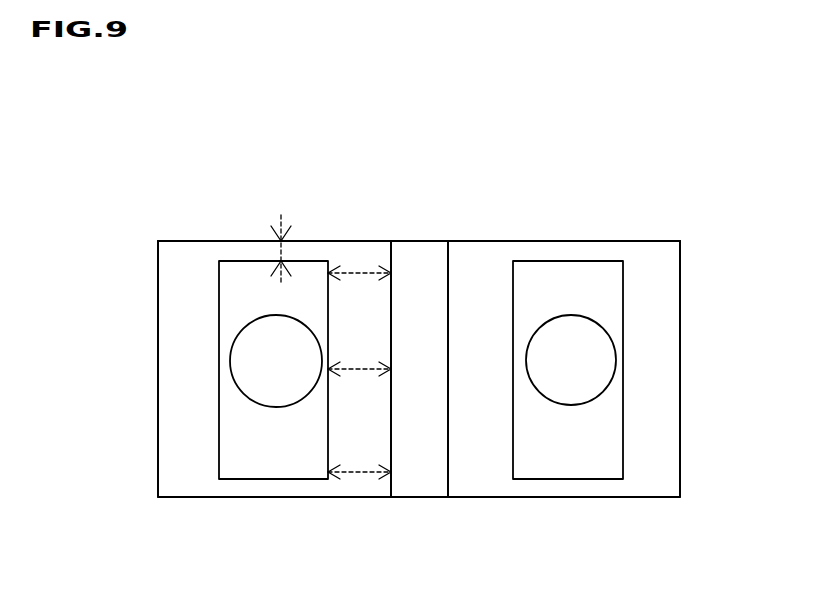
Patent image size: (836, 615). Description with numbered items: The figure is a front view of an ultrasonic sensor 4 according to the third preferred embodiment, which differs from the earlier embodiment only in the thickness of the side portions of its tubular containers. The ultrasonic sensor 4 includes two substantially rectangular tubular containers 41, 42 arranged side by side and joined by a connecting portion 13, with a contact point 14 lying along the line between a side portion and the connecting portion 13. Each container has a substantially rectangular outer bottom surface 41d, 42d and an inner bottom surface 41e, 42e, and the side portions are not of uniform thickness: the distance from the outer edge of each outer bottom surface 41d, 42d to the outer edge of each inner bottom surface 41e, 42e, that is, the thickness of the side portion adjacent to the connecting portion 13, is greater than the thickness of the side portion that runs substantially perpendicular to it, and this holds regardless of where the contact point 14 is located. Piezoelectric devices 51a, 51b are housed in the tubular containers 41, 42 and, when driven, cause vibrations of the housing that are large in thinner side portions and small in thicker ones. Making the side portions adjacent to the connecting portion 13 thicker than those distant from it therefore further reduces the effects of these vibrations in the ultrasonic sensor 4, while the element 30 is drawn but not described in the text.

The ultrasonic sensor 4 is at (174, 136).
The rotor core 30 is at (584, 229).
The tubular container 41 is at (273, 508).
The outer bottom surface 41d is at (158, 240).
The inner bottom surface 41e is at (219, 261).
The tubular container 42 is at (572, 508).
The outer bottom surface 42d is at (680, 240).
The inner bottom surface 42e is at (623, 259).
The connecting portion 13 is at (422, 508).
The contact point 14 is at (392, 398).
The piezoelectric device 51a is at (240, 385).
The piezoelectric device 51b is at (609, 384).